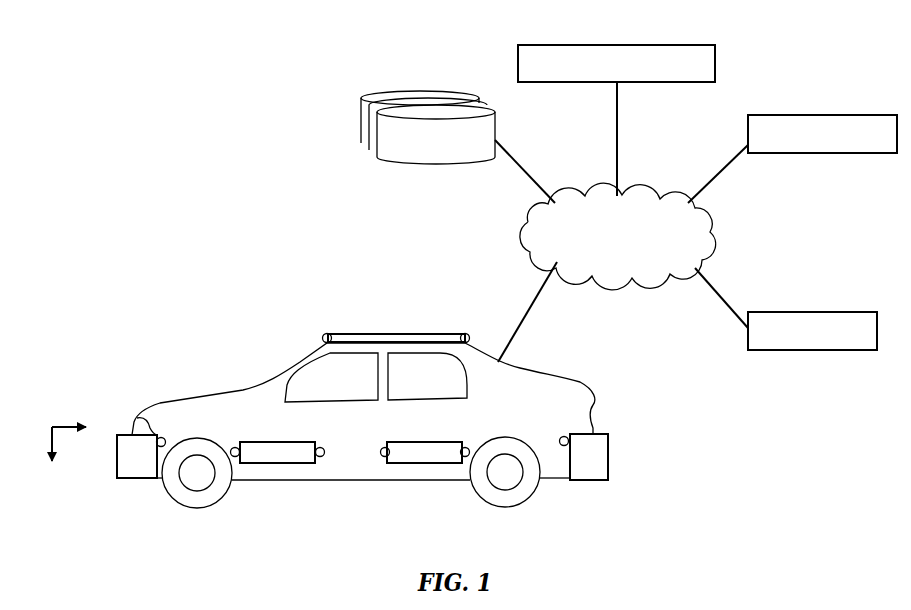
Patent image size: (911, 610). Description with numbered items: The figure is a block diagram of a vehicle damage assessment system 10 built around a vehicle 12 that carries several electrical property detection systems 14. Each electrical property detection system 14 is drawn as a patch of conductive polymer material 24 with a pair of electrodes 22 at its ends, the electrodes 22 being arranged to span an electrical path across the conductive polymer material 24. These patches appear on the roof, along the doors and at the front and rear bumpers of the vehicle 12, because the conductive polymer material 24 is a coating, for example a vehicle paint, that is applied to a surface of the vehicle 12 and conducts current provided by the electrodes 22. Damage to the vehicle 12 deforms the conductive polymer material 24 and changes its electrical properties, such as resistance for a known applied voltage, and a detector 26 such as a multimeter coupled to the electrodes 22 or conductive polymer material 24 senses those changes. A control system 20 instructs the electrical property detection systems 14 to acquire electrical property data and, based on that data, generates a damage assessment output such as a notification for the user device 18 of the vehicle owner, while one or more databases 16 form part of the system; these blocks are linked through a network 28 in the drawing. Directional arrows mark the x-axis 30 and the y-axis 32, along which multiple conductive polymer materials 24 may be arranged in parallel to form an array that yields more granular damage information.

The vehicle damage assessment system 10 is at (196, 40).
The vehicle 12 is at (227, 323).
The electrical property detection system 14 is at (384, 310).
The database 16 is at (438, 164).
The user device 18 is at (822, 115).
The control system 20 is at (618, 45).
The electrode 22 is at (330, 335).
The conductive polymer material 24 is at (400, 334).
The detector 26 is at (812, 312).
The network 28 is at (714, 240).
The x-axis 30 is at (68, 425).
The y-axis 32 is at (52, 440).